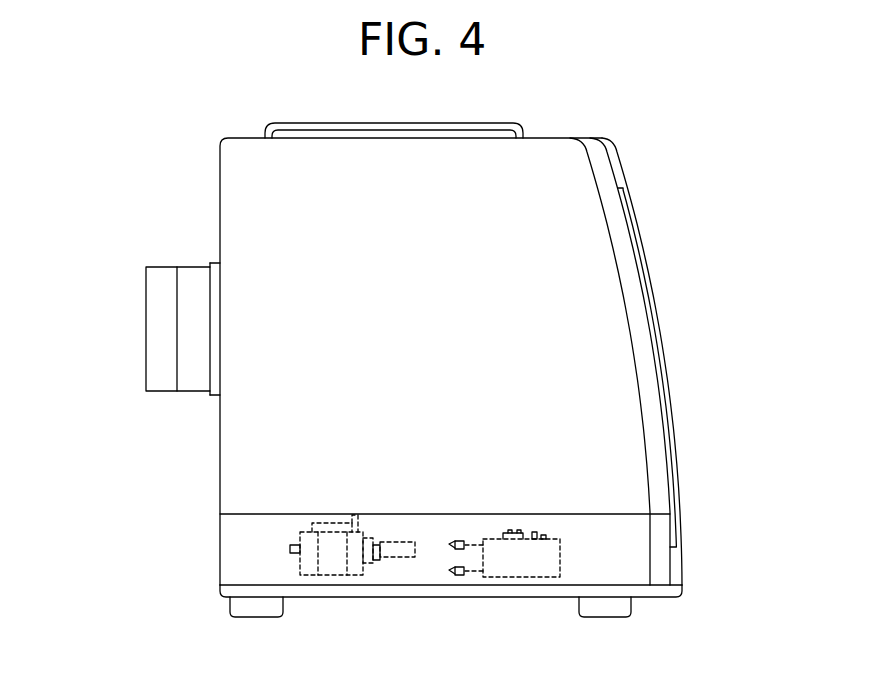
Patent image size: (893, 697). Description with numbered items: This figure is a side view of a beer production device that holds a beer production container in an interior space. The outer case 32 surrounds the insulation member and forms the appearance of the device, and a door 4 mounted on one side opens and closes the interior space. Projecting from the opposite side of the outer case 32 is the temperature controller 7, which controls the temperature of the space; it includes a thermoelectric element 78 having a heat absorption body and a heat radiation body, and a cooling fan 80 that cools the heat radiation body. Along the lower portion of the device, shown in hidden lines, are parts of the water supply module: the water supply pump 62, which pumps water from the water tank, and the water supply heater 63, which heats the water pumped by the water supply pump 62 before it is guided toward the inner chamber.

The door 4 is at (653, 283).
The outer case 32 is at (232, 172).
The temperature controller 7 is at (155, 332).
The cooling fan 80 is at (160, 328).
The thermoelectric element 78 is at (190, 408).
The water supply pump 62 is at (337, 575).
The water supply heater 63 is at (527, 577).